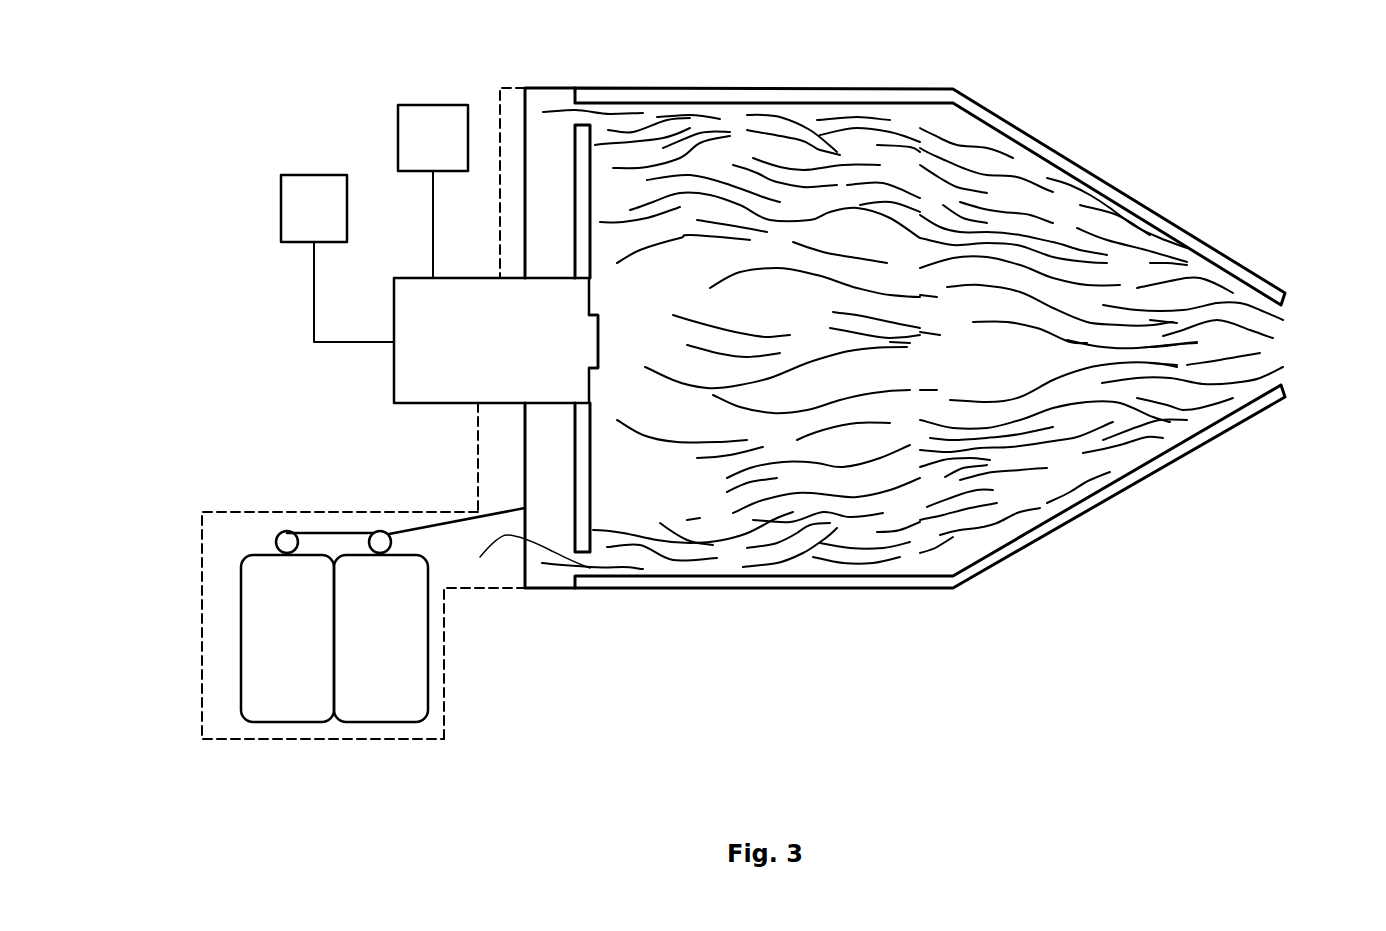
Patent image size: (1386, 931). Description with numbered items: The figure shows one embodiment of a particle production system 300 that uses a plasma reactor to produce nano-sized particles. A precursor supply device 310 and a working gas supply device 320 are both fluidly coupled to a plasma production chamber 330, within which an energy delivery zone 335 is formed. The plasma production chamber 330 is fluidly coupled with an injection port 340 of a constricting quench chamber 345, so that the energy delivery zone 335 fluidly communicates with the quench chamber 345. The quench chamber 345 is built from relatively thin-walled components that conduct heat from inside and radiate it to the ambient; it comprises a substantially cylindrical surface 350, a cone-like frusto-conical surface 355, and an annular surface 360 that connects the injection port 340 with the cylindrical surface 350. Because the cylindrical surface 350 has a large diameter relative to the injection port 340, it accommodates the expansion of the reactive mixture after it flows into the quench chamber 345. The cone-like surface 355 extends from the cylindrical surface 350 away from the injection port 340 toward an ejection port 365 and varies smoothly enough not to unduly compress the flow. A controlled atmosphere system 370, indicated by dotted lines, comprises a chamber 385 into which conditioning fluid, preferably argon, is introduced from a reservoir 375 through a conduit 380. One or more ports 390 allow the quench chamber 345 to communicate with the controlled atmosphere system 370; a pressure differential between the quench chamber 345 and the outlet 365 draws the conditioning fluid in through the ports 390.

The particle production system 300 is at (1196, 108).
The precursor supply device 310 is at (433, 105).
The working gas supply device 320 is at (313, 175).
The plasma production chamber 330 is at (468, 278).
The energy delivery zone 335 is at (463, 355).
The injection port 340 is at (600, 331).
The constricting quench chamber 345 is at (955, 368).
The cylindrical surface 350 is at (826, 88).
The cone-like surface 355 is at (1073, 520).
The annular surface 360 is at (592, 477).
The ejection port 365 is at (1278, 351).
The controlled atmosphere system 370 is at (256, 494).
The reservoir 375 is at (302, 722).
The conduit 380 is at (462, 518).
The chamber 385 is at (531, 460).
The ports 390 is at (522, 560).